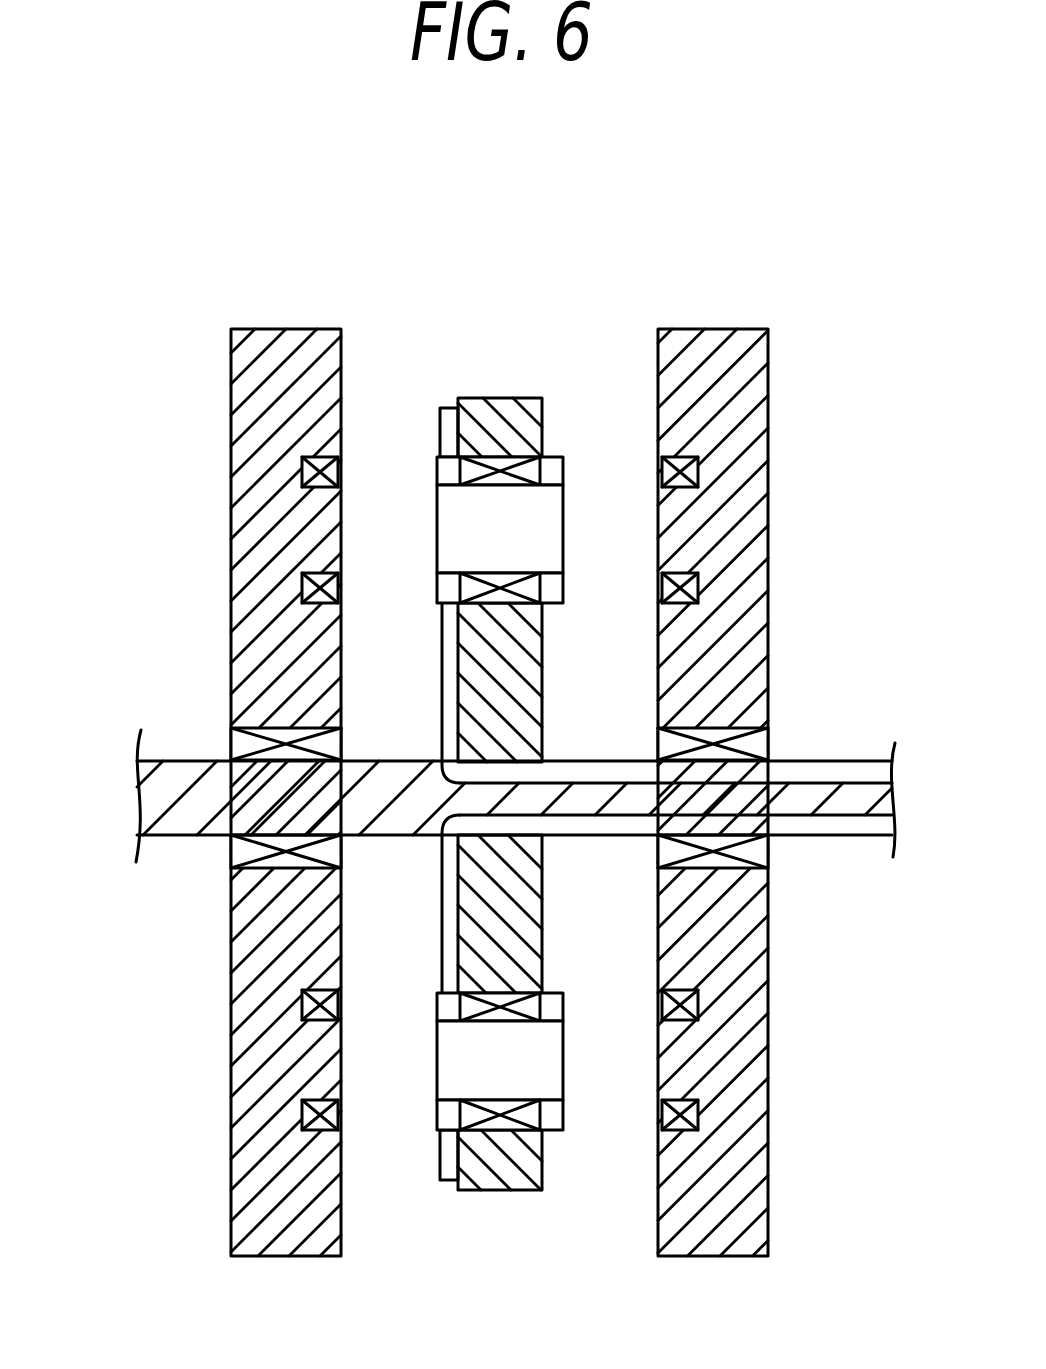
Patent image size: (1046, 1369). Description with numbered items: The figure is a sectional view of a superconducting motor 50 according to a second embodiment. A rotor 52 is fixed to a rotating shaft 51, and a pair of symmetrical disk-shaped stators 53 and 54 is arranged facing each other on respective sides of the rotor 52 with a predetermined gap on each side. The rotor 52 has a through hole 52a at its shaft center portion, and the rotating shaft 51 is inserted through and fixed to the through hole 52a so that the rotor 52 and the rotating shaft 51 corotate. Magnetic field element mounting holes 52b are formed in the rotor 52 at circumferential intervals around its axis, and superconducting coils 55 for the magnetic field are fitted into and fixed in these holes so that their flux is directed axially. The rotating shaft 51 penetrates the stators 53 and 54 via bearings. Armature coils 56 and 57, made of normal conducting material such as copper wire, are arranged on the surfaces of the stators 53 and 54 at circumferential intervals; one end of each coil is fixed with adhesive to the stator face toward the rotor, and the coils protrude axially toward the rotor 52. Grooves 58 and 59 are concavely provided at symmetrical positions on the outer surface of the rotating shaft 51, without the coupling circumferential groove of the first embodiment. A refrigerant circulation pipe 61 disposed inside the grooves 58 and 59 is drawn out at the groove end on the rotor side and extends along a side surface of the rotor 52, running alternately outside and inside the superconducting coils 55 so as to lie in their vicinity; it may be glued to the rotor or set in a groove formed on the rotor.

The superconducting motor 50 is at (150, 312).
The rotating shaft 51 is at (190, 806).
The rotor 52 is at (500, 415).
The through hole 52a is at (535, 768).
The magnetic field element mounting holes 52b is at (560, 462).
The stator 53 is at (262, 345).
The stator 54 is at (740, 345).
The superconducting coils 55 is at (445, 473).
The armature coils 56 is at (300, 467).
The armature coils 57 is at (700, 468).
The groove 58 is at (797, 780).
The groove 59 is at (797, 815).
The refrigerant circulation pipe 61 is at (850, 768).